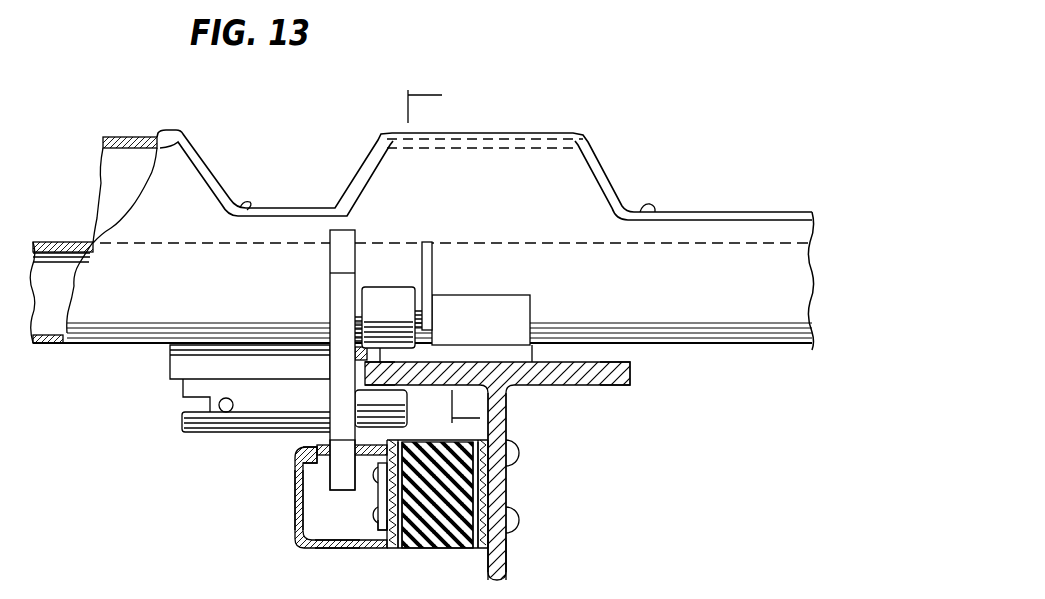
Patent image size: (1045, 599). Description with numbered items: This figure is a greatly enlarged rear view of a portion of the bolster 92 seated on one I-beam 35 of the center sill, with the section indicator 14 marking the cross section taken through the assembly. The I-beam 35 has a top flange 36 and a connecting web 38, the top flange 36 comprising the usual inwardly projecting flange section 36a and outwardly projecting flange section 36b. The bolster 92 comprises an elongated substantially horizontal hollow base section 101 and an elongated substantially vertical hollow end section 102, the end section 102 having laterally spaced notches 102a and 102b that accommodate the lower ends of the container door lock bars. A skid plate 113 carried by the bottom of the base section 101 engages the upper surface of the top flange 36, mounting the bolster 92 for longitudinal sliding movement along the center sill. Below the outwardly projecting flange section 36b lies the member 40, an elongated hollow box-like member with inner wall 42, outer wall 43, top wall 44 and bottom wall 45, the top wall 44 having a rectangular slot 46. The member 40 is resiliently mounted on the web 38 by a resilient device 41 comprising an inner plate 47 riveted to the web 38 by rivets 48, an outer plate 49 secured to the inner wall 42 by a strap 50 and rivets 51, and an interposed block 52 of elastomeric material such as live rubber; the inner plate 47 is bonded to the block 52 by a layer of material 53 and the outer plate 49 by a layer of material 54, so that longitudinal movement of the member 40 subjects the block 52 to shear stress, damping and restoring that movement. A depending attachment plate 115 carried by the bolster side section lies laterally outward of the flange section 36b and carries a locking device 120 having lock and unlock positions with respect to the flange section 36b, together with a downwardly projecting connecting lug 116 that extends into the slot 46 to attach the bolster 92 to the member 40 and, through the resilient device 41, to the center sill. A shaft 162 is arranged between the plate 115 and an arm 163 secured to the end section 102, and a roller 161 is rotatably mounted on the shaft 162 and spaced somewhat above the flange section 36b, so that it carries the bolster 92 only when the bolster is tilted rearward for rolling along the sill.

The section line 14- 14 is at (427, 259).
The I-beam 35 is at (512, 552).
The top flange 36 is at (570, 362).
The inwardly projecting flange section 36a is at (632, 373).
The outwardly projecting flange section 36b is at (365, 367).
The connecting web 38 is at (508, 415).
The longitudinally extending member 40 is at (285, 507).
The resilient device 41 is at (454, 519).
The inner wall 42 is at (380, 482).
The outer wall 43 is at (295, 518).
The top wall 44 is at (313, 450).
The bottom wall 45 is at (327, 552).
The slot 46 is at (363, 449).
The inner plate 47 is at (486, 497).
The rivet 48 is at (517, 455).
The outer plate 49 is at (392, 548).
The strap 50 is at (368, 508).
The rivet 51 is at (368, 532).
The block of elastomeric material 52 is at (453, 548).
The layer of material 53 is at (475, 548).
The layer of material 54 is at (400, 548).
The bolster 92 is at (620, 176).
The base section 101 is at (46, 242).
The end section 102 is at (518, 218).
The notch 102a is at (245, 208).
The notch 102b is at (655, 212).
The skid plate 113 is at (463, 356).
The attachment plate 115 is at (337, 312).
The connecting lug 116 is at (333, 478).
The locking device 120 is at (207, 435).
The roller 161 is at (380, 292).
The shaft 162 is at (432, 316).
The arm 163 is at (432, 273).